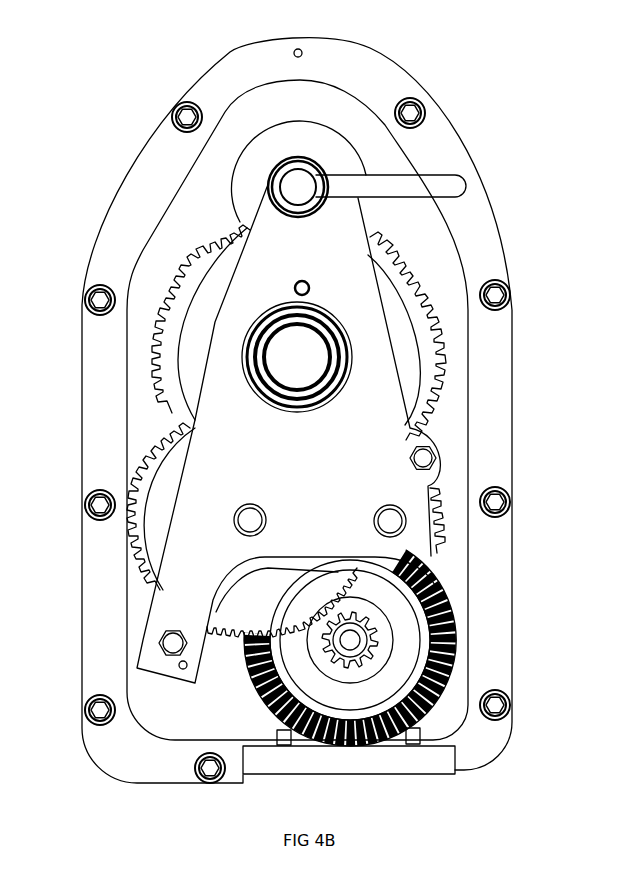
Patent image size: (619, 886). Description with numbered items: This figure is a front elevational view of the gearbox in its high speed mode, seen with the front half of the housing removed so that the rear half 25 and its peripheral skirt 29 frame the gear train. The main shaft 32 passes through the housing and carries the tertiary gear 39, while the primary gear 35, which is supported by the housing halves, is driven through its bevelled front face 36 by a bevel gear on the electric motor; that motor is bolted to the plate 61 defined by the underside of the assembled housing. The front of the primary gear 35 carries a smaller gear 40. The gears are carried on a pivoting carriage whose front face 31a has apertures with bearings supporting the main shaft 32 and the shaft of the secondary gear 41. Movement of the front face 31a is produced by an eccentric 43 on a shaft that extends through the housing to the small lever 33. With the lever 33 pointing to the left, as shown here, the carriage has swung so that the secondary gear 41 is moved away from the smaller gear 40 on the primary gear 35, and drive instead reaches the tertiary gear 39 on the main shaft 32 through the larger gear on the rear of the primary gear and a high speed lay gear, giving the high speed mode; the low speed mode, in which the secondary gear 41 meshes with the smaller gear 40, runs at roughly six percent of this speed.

The rear half 25 is at (515, 432).
The skirt 29 is at (470, 233).
The front face of the carriage 31a is at (371, 432).
The main shaft 32 is at (309, 371).
The lever 33 is at (423, 190).
The primary gear 35 is at (400, 637).
The bevelled front face 36 is at (450, 665).
The tertiary gear 39 is at (398, 318).
The smaller gear 40 is at (338, 655).
The secondary gear 41 is at (163, 513).
The eccentric 43 is at (317, 162).
The plate 61 is at (430, 762).